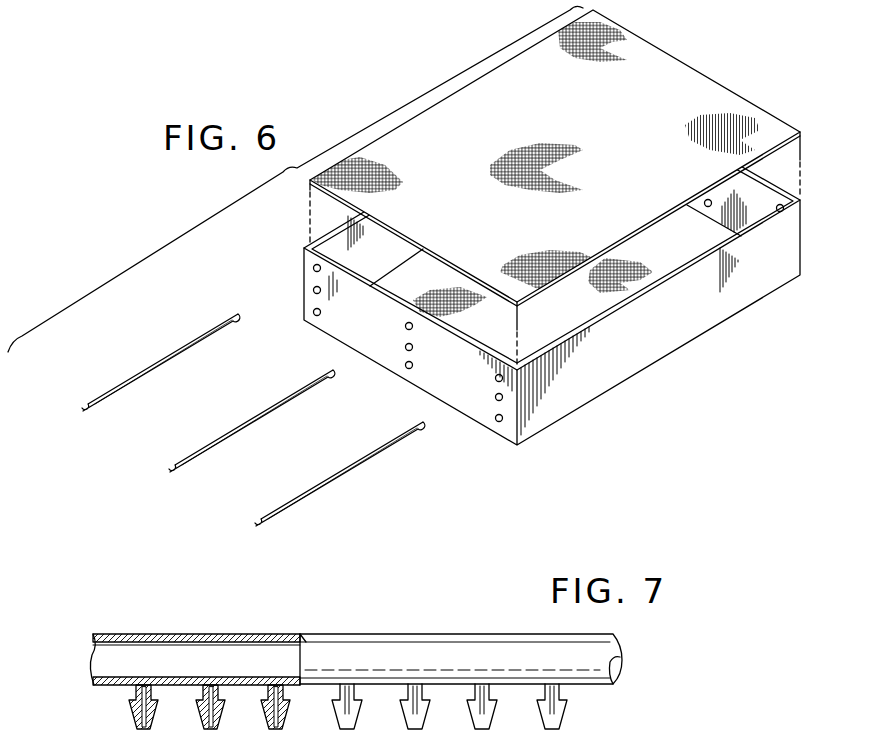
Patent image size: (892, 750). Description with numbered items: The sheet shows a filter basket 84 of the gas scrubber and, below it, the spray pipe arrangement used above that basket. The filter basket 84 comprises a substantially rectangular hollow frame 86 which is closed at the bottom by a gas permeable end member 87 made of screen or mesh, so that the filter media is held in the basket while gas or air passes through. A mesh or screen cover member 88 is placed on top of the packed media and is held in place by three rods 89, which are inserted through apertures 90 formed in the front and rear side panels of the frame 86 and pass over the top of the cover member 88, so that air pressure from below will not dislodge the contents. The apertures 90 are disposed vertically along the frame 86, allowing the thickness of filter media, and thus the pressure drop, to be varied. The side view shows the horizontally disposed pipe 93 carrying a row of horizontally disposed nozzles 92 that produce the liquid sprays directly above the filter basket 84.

In FIG. 6, the first filter basket 84 is at (552, 227).
In FIG. 6, the hollow frame 86 is at (645, 358).
In FIG. 6, the gas permeable end member 87 is at (440, 295).
In FIG. 6, the cover member 88 is at (722, 100).
In FIG. 6, the rods 89 is at (213, 437).
In FIG. 6, the apertures 90 is at (497, 378).
In FIG. 7, the nozzles 92 is at (340, 713).
In FIG. 7, the pipe 93 is at (382, 616).